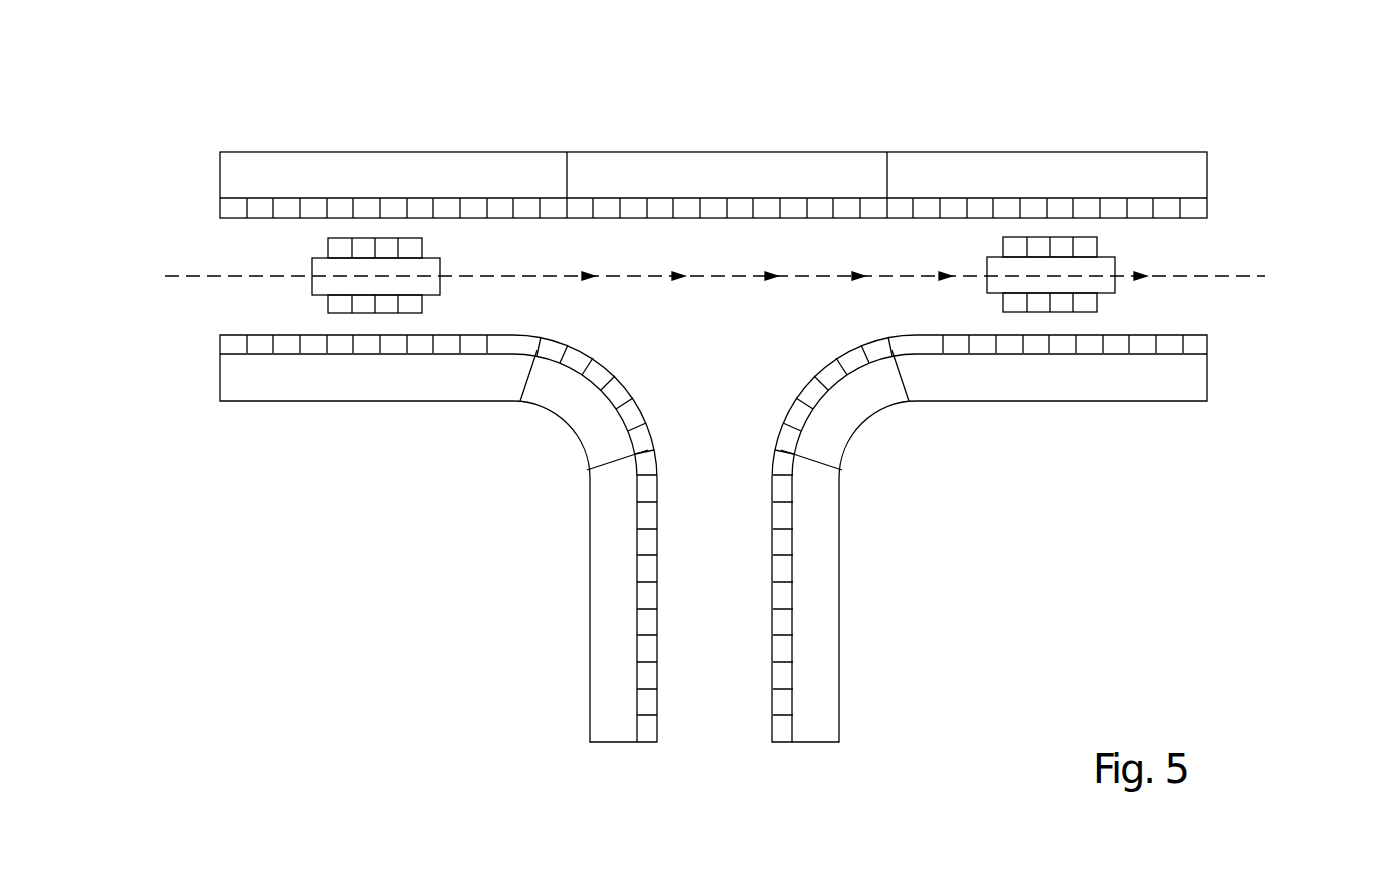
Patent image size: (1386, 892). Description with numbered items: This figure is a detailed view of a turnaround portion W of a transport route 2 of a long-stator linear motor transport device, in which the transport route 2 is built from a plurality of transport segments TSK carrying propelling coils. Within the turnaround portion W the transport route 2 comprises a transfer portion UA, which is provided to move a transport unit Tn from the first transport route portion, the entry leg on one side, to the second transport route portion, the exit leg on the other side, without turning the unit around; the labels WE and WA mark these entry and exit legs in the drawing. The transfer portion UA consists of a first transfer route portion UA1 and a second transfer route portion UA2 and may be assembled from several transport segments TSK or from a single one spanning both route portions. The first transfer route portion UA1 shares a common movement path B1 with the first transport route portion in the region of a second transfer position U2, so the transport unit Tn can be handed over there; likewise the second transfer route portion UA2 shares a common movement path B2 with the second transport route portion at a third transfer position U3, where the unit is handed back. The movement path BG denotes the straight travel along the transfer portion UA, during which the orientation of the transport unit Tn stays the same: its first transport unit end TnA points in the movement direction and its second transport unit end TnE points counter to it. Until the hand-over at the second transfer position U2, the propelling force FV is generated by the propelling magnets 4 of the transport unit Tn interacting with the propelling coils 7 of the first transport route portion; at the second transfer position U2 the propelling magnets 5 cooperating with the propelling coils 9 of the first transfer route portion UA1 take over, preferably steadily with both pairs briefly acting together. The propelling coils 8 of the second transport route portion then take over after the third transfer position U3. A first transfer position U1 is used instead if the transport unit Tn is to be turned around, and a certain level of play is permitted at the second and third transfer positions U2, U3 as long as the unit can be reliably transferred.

The transport route 2 is at (1250, 483).
The propelling magnets 4 is at (1063, 300).
The propelling magnets 5 is at (1037, 245).
The propelling coils 7 is at (645, 697).
The propelling coils 8 is at (782, 700).
The propelling coils 9 is at (927, 205).
The turnaround portion W is at (735, 118).
The transfer portion UA is at (660, 140).
The first transfer route portion UA1 is at (228, 225).
The second transfer route portion UA2 is at (1182, 230).
The transport segment TSK is at (630, 173).
The transport unit Tn is at (1060, 270).
The second transport unit end TnE is at (998, 267).
The first transport unit end TnA is at (1103, 270).
The propelling force FV is at (808, 250).
The movement path BG is at (652, 278).
The common movement path B1 is at (200, 280).
The common movement path B2 is at (1238, 275).
The first transfer position U1 is at (702, 657).
The second transfer position U2 is at (305, 308).
The third transfer position U3 is at (1125, 305).
The entry path WE is at (492, 588).
The exit path WA is at (903, 523).